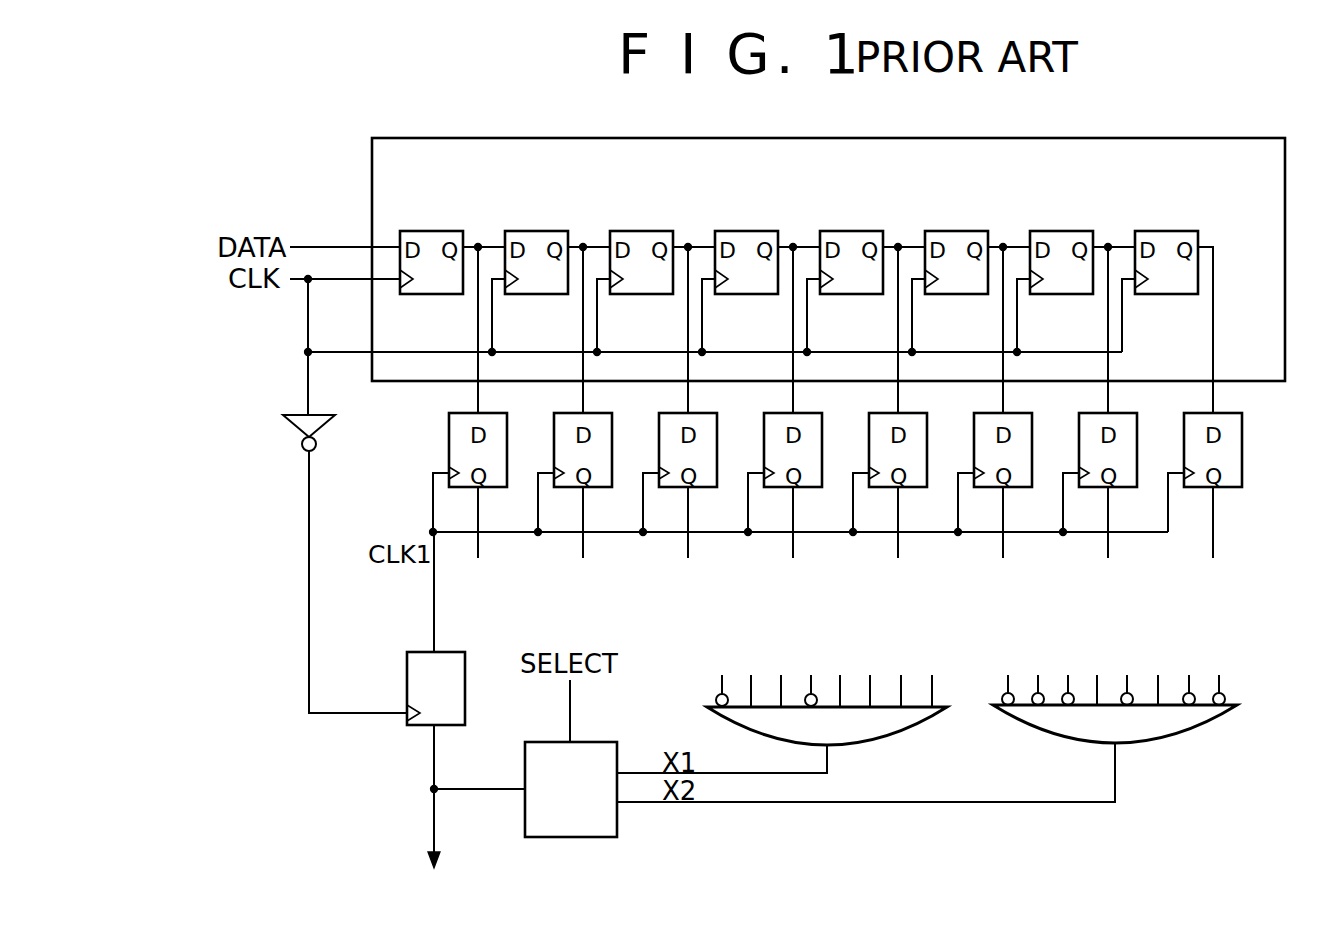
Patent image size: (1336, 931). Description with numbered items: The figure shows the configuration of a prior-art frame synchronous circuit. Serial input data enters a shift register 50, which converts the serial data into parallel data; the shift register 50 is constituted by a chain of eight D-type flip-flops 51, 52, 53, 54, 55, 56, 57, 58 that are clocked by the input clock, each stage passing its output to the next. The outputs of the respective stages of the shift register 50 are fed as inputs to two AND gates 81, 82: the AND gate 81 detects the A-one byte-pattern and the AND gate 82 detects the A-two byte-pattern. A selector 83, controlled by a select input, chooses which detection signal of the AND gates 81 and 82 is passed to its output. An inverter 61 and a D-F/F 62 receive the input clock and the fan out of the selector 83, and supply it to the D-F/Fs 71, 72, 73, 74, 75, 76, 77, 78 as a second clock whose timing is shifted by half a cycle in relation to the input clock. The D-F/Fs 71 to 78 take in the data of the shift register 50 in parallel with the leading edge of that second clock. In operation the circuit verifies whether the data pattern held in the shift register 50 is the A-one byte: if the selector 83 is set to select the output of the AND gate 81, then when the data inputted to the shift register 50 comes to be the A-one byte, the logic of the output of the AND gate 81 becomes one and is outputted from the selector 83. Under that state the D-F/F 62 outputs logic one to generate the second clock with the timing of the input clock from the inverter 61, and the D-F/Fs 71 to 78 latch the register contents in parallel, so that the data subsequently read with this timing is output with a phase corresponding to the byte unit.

The shift register 50 is at (866, 138).
The D-type flip-flop 51 is at (433, 230).
The D-type flip-flop 52 is at (538, 230).
The D-type flip-flop 53 is at (643, 230).
The D-type flip-flop 54 is at (748, 230).
The D-type flip-flop 55 is at (853, 230).
The D-type flip-flop 56 is at (958, 230).
The D-type flip-flop 57 is at (1063, 230).
The D-type flip-flop 58 is at (1168, 230).
The inverter 61 is at (336, 427).
The D-F/F 62 is at (456, 652).
The D-F/F 71 is at (490, 406).
The D-F/F 72 is at (595, 406).
The D-F/F 73 is at (700, 406).
The D-F/F 74 is at (805, 406).
The D-F/F 75 is at (910, 406).
The D-F/F 76 is at (1015, 406).
The D-F/F 77 is at (1120, 406).
The D-F/F 78 is at (1225, 406).
The AND gate 81 is at (914, 734).
The AND gate 82 is at (1176, 740).
The selector 83 is at (524, 765).